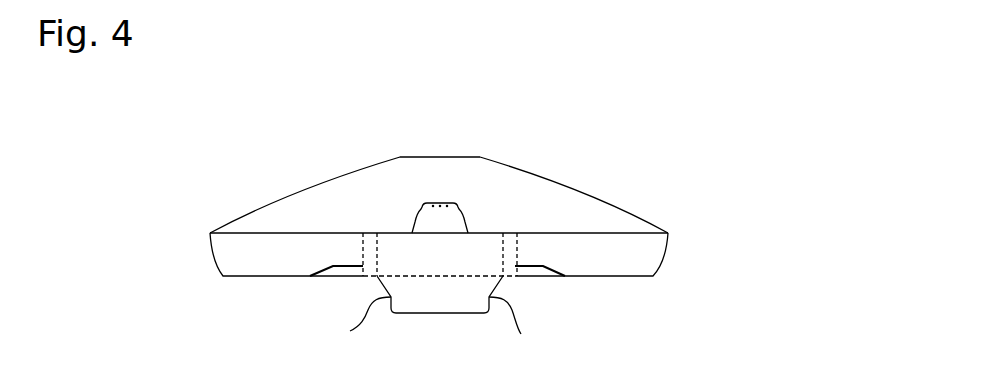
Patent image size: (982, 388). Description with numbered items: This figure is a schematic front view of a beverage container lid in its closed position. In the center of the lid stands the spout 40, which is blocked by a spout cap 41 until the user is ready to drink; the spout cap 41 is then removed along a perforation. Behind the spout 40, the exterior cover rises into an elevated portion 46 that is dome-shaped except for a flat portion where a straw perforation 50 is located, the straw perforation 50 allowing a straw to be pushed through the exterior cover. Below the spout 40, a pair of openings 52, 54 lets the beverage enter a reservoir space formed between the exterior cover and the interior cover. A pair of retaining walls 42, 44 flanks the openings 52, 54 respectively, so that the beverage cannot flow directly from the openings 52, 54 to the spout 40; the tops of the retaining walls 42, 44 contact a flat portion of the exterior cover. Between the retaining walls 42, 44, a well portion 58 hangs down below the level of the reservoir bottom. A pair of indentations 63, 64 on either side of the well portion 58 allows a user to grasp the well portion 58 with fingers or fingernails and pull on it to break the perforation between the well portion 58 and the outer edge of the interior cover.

The spout 40 is at (430, 222).
The spout cap 41 is at (442, 198).
The retaining wall 42 is at (505, 248).
The retaining wall 44 is at (363, 249).
The elevated portion 46 is at (557, 175).
The straw perforation 50 is at (435, 157).
The opening 52 is at (528, 268).
The opening 54 is at (347, 268).
The well portion 58 is at (438, 293).
The indentation 63 is at (354, 324).
The indentation 64 is at (519, 324).